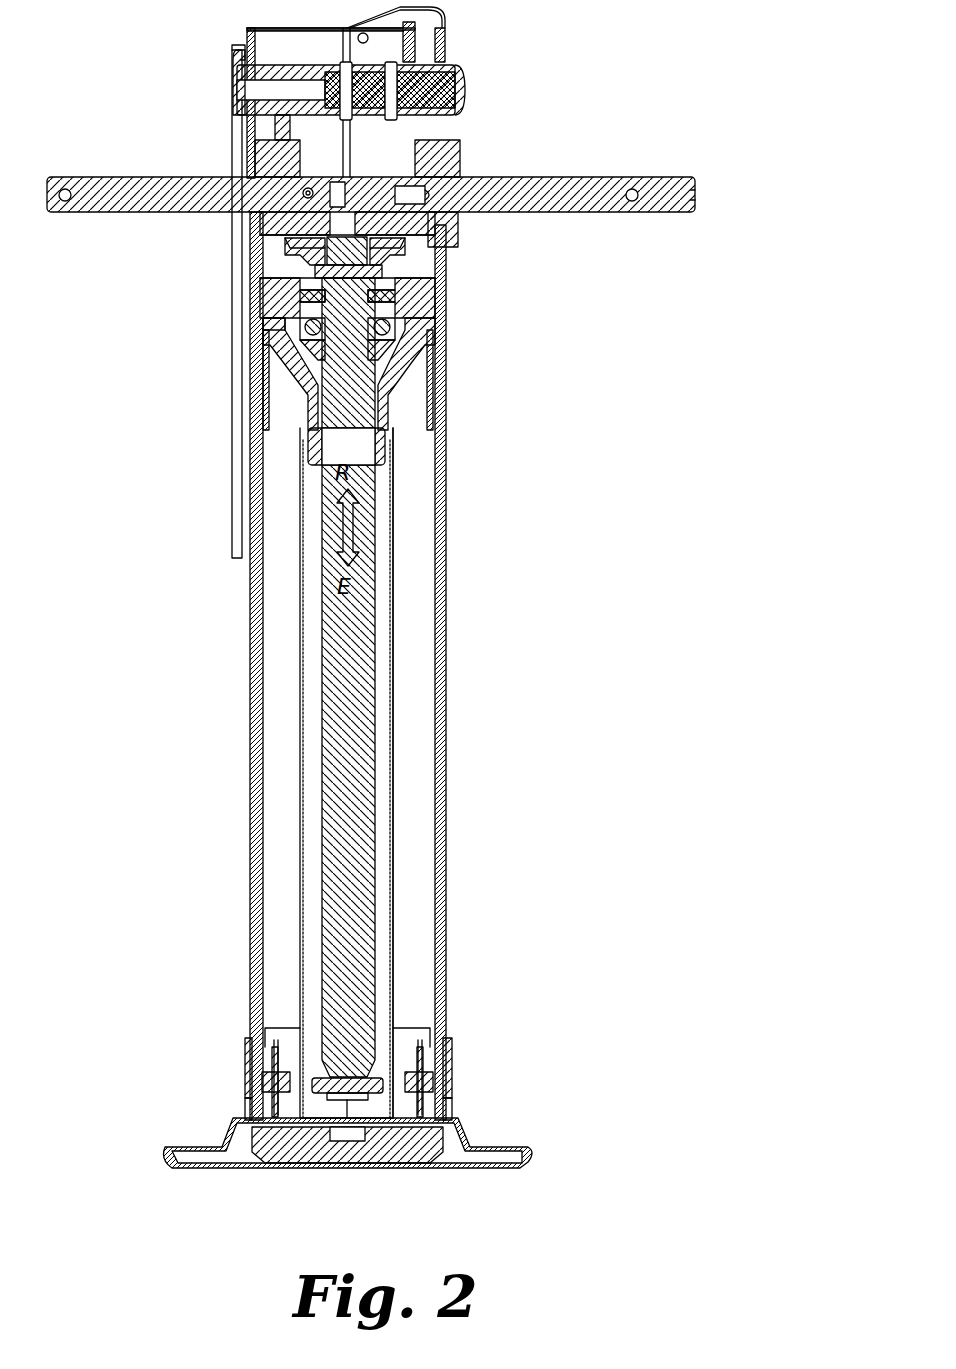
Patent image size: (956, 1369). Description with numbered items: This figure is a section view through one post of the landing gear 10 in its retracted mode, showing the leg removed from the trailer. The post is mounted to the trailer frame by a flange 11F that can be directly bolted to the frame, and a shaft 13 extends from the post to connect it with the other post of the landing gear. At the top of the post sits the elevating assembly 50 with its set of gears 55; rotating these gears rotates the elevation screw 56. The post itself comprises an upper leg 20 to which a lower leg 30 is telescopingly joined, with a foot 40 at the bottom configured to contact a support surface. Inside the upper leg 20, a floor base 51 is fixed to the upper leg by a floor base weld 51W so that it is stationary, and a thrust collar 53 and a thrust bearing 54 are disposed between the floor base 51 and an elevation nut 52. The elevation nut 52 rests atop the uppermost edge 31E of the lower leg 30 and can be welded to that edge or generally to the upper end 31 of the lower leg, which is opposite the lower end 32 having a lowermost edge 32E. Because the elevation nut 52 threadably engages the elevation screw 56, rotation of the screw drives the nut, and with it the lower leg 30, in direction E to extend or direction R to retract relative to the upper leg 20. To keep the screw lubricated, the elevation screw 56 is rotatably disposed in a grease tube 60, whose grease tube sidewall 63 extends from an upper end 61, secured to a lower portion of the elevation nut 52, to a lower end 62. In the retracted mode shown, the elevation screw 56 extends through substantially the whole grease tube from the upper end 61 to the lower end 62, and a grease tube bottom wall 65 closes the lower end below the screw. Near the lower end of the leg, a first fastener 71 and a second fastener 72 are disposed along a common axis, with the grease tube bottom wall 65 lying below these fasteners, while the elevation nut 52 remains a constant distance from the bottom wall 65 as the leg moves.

The landing gear 10 is at (530, 103).
The shaft 13 is at (88, 175).
The elevating assembly 50 is at (190, 110).
The set of gears 55 is at (297, 243).
The flange 11F is at (233, 328).
The uppermost edge 31E is at (262, 340).
The upper end 31 is at (265, 352).
The floor base weld 51W is at (437, 270).
The floor base 51 is at (430, 285).
The thrust bearing 54 is at (392, 318).
The upper leg 20 is at (449, 322).
The thrust collar 53 is at (392, 347).
The elevation nut 52 is at (405, 363).
The elevation screw 56 is at (360, 410).
The upper end of the grease tube 61 is at (395, 445).
The grease tube sidewall 63 is at (393, 537).
The grease tube 60 is at (399, 592).
The lower leg 30 is at (452, 704).
The first fastener 71 is at (268, 1080).
The second fastener 72 is at (420, 1080).
The lower end 32 is at (258, 1110).
The lowermost edge 32E is at (255, 1123).
The lower end of the grease tube 62 is at (405, 1107).
The foot 40 is at (558, 1143).
The grease tube bottom wall 65 is at (380, 1120).